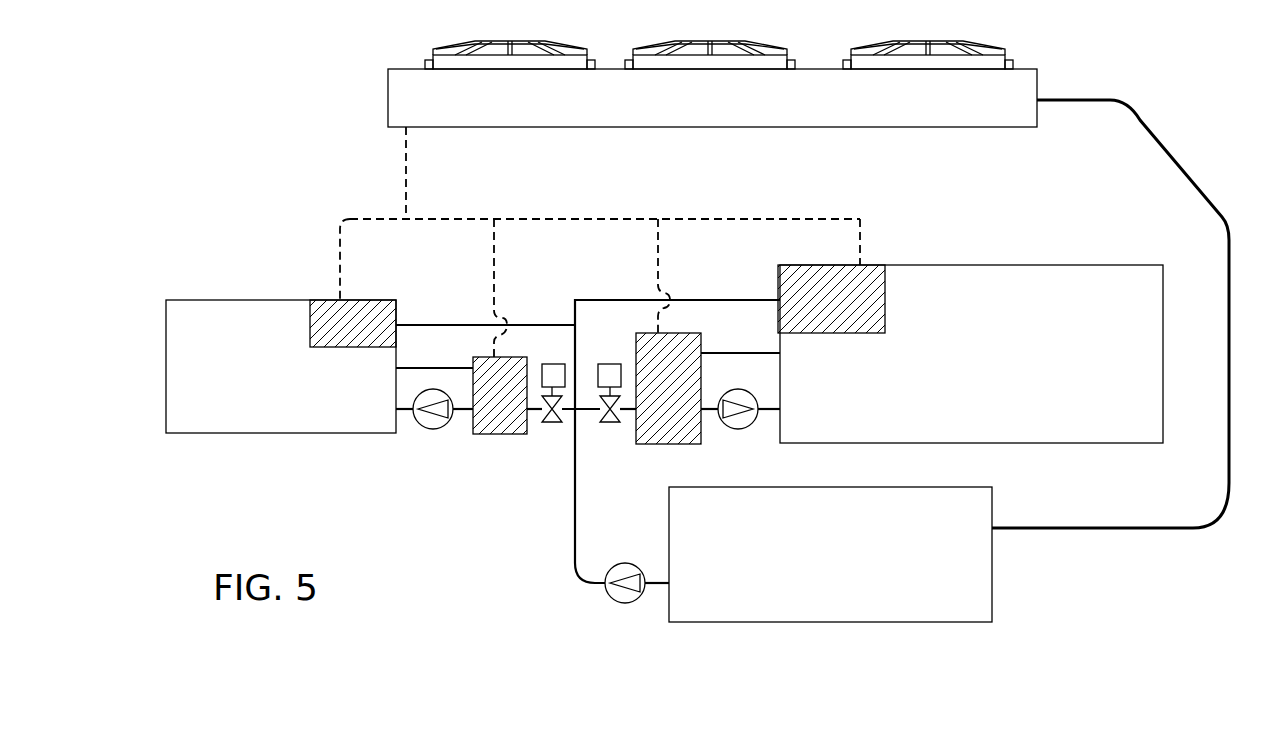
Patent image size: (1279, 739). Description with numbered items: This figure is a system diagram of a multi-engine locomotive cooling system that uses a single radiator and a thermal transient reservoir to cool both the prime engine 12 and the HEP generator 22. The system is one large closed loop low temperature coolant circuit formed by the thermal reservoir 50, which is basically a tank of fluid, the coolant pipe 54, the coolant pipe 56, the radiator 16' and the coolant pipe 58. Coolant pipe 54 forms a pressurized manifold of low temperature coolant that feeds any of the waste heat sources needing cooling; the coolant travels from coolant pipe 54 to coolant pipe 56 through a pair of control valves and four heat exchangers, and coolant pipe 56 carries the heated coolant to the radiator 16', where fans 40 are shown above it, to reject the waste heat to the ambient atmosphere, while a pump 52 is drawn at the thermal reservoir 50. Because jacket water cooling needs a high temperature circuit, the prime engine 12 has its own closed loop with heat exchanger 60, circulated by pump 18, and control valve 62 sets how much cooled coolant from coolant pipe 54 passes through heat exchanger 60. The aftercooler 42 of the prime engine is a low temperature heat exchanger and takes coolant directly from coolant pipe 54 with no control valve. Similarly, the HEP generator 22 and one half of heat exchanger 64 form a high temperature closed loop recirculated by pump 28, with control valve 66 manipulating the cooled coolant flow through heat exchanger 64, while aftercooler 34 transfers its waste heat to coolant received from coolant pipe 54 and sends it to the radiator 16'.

The prime engine 12 is at (997, 393).
The radiator 16' is at (703, 76).
The pump 18 is at (750, 425).
The HEP generator 22 is at (319, 390).
The pump 28 is at (428, 430).
The aftercooler 34 is at (343, 322).
The fans 40 is at (1010, 48).
The aftercooler 42 is at (815, 290).
The thermal reservoir 50 is at (942, 563).
The auxiliary pump 52 is at (615, 592).
The coolant pipe 54 is at (573, 538).
The coolant pipe 56 is at (404, 166).
The coolant pipe 58 is at (1172, 148).
The heat exchanger 60 is at (683, 431).
The control valve 62 is at (609, 428).
The heat exchanger 64 is at (487, 418).
The control valve 66 is at (550, 427).